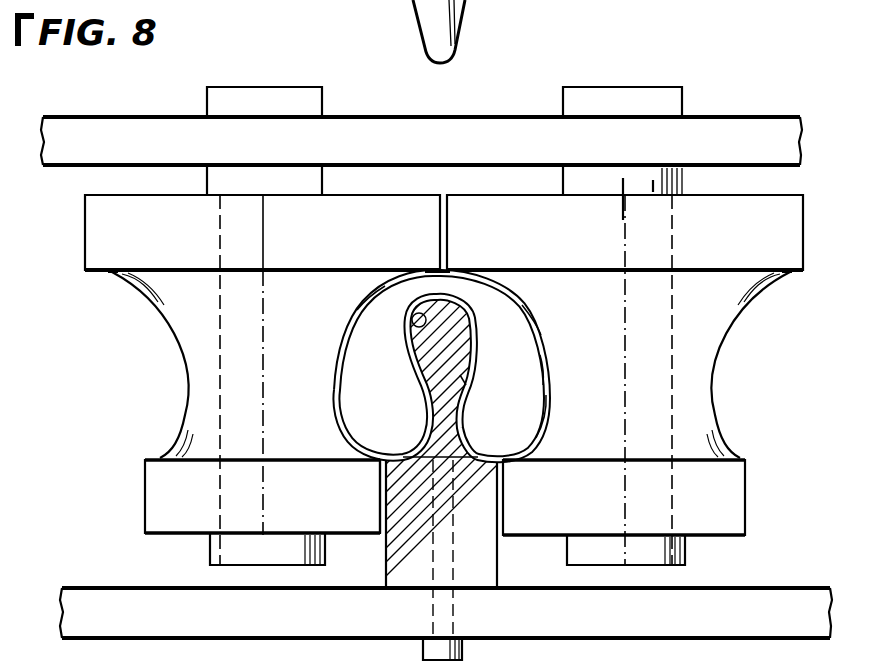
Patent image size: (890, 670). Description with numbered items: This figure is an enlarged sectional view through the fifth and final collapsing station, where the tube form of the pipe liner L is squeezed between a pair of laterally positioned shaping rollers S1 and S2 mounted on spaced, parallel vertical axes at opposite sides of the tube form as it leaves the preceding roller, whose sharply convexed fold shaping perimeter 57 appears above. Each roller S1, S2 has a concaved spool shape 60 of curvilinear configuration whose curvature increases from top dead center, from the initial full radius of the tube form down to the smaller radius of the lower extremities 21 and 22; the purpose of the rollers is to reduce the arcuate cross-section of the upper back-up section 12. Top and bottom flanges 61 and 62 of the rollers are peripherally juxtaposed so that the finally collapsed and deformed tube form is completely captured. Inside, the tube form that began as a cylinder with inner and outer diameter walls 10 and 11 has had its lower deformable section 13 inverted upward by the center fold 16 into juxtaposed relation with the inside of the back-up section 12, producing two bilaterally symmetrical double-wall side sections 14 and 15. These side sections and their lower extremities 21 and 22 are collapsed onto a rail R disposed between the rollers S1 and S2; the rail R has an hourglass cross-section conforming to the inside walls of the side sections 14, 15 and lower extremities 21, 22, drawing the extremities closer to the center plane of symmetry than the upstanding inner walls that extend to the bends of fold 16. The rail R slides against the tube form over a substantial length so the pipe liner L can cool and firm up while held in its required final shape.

The inner diameter wall 10 is at (520, 332).
The outer diameter wall 11 is at (536, 360).
The upper back-up section 12 is at (431, 270).
The lower deformable section 13 is at (398, 462).
The side section 14 is at (380, 303).
The side section 15 is at (552, 425).
The center fold 16 is at (412, 326).
The lower extremity 21 is at (382, 474).
The lower extremity 22 is at (443, 490).
The fold shaping perimeter 57 is at (460, 53).
The concaved spool shape 60 is at (178, 355).
The top flange 61 is at (112, 275).
The bottom flange 62 is at (166, 473).
The rail R is at (448, 380).
The pipe liner L is at (518, 318).
The shaping roller S1 is at (88, 252).
The shaping roller S2 is at (765, 220).